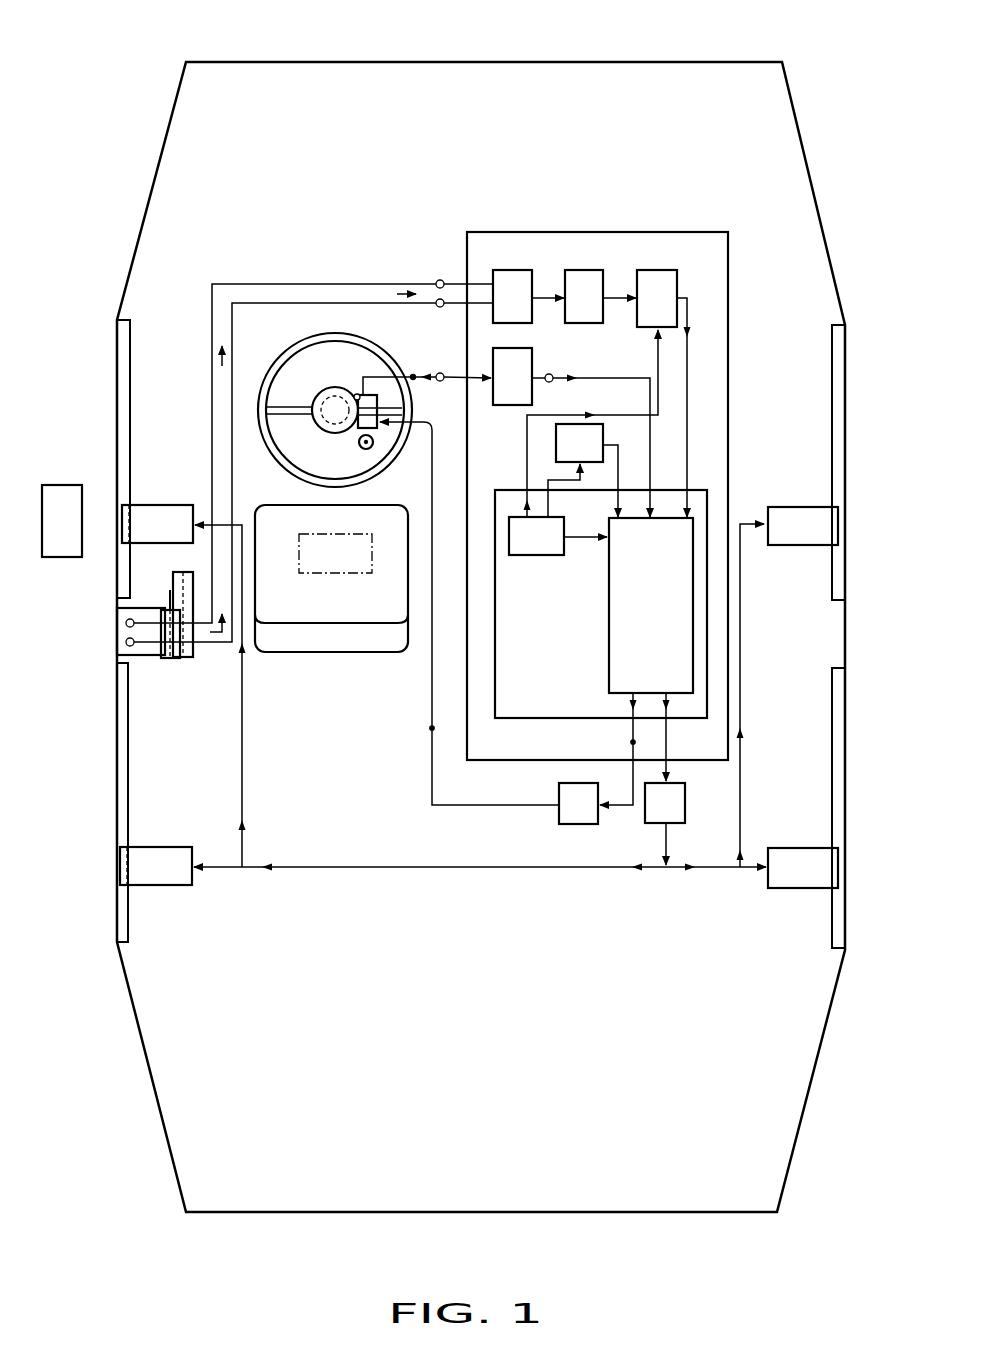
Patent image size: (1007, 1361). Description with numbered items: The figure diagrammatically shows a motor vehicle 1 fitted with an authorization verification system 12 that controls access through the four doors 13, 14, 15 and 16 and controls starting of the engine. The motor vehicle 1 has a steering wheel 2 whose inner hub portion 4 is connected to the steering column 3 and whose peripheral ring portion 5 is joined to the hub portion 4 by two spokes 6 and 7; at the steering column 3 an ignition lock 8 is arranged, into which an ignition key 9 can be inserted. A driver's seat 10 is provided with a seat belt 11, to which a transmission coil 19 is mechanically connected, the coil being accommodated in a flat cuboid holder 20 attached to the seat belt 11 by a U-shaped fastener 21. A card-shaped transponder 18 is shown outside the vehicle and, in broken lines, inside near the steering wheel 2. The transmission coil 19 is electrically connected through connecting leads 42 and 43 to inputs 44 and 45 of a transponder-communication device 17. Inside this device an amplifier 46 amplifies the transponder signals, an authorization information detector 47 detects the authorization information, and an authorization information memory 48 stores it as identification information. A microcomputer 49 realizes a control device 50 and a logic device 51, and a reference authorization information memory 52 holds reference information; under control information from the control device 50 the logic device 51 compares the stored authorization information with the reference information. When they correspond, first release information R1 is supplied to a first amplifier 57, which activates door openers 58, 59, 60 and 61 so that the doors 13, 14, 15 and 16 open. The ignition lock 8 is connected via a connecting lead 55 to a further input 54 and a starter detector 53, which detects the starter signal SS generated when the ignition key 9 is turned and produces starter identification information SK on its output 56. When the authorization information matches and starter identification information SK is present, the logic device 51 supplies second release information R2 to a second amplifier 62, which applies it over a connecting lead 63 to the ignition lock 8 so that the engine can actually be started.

The motor vehicle 1 is at (809, 66).
The steering wheel 2 is at (270, 357).
The steering column 3 is at (327, 397).
The inner hub portion 4 is at (312, 405).
The peripheral ring portion 5 is at (363, 352).
The spoke 6 is at (285, 418).
The spoke 7 is at (404, 414).
The ignition lock 8 is at (360, 396).
The ignition key 9 is at (359, 444).
The driver's seat 10 is at (345, 642).
The seat belt 11 is at (160, 660).
The authorization verification system 12 is at (271, 249).
The door 13 is at (124, 388).
The door 14 is at (840, 395).
The door 15 is at (121, 765).
The door 16 is at (836, 762).
The transponder-communication device 17 is at (669, 227).
The transponder 18 is at (58, 490).
The transmission coil 19 is at (184, 600).
The cuboid holder 20 is at (178, 586).
The U-shaped fastener 21 is at (192, 662).
The connecting lead 42 is at (233, 457).
The connecting lead 43 is at (210, 438).
The input 44 is at (437, 300).
The input 45 is at (440, 280).
The amplifier 46 is at (525, 279).
The authorization information detector 47 is at (600, 279).
The authorization information memory 48 is at (672, 279).
The microcomputer 49 is at (537, 715).
The control device 50 is at (537, 557).
The logic device 51 is at (612, 640).
The reference authorization information memory 52 is at (598, 441).
The starter detector 53 is at (520, 362).
The further input 54 is at (441, 373).
The connecting lead 55 is at (413, 374).
The output 56 is at (553, 382).
The first amplifier 57 is at (672, 817).
The door opener 58 is at (157, 512).
The door opener 59 is at (798, 512).
The door opener 60 is at (153, 852).
The door opener 61 is at (790, 855).
The second amplifier 62 is at (585, 820).
The connecting lead 63 is at (430, 730).
The starter signal SS is at (427, 382).
The starter identification information SK is at (618, 380).
The first release information R1 is at (668, 738).
The second release information R2 is at (631, 742).